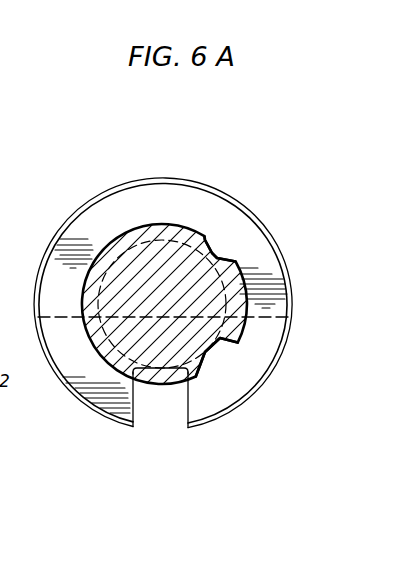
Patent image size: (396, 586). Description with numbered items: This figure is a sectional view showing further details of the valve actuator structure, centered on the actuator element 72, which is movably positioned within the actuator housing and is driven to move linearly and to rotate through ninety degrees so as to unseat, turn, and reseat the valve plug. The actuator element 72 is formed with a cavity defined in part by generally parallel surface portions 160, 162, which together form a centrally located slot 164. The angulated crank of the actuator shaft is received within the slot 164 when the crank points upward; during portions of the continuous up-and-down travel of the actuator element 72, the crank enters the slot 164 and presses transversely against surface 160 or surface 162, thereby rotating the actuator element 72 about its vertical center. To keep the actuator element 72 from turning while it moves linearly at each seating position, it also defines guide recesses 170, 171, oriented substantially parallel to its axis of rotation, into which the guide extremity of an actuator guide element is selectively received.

The actuator element 72 is at (182, 178).
The guide recess 171 is at (212, 257).
The guide recess 170 is at (215, 346).
The slot 164 is at (173, 416).
The surface portion 160 is at (140, 423).
The surface portion 162 is at (190, 426).